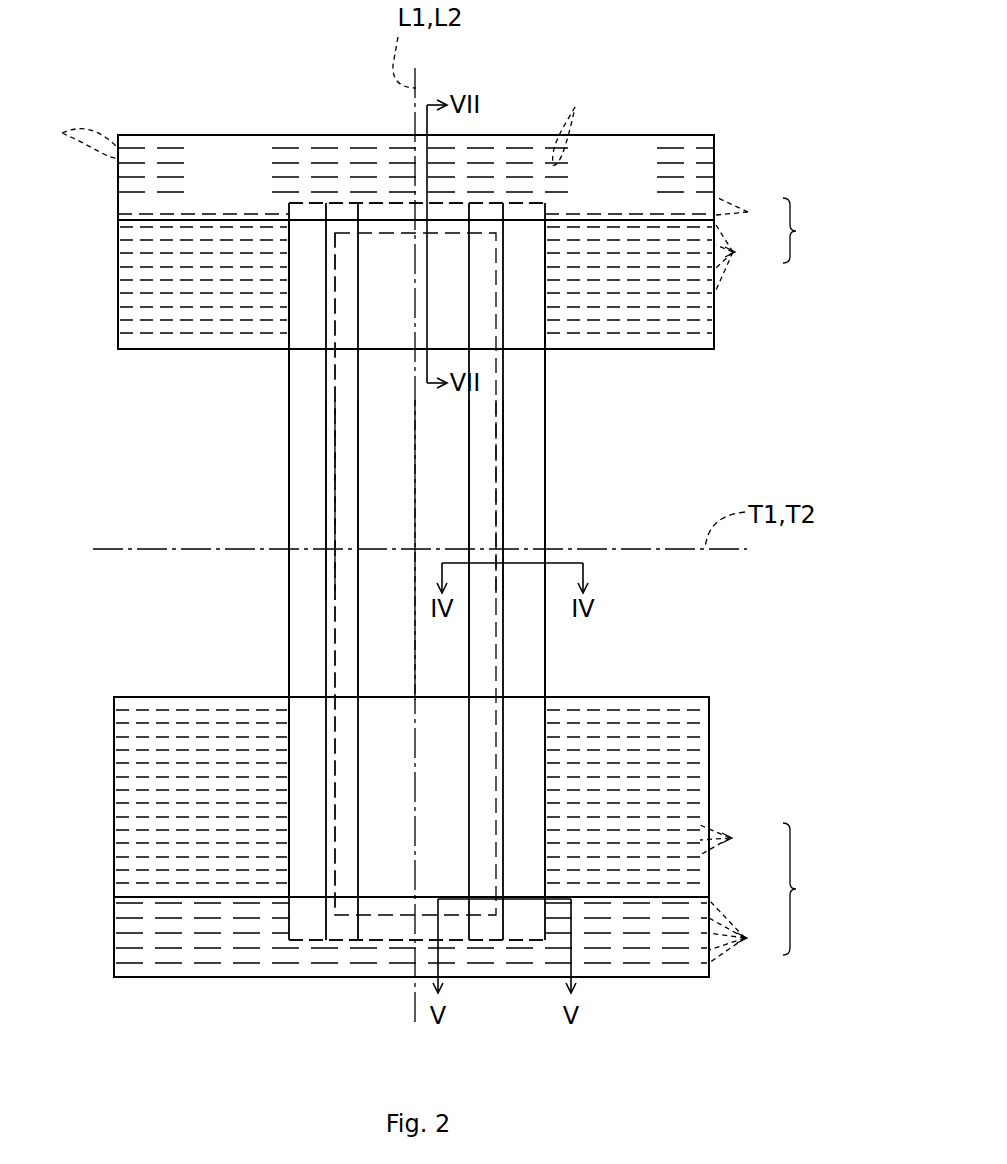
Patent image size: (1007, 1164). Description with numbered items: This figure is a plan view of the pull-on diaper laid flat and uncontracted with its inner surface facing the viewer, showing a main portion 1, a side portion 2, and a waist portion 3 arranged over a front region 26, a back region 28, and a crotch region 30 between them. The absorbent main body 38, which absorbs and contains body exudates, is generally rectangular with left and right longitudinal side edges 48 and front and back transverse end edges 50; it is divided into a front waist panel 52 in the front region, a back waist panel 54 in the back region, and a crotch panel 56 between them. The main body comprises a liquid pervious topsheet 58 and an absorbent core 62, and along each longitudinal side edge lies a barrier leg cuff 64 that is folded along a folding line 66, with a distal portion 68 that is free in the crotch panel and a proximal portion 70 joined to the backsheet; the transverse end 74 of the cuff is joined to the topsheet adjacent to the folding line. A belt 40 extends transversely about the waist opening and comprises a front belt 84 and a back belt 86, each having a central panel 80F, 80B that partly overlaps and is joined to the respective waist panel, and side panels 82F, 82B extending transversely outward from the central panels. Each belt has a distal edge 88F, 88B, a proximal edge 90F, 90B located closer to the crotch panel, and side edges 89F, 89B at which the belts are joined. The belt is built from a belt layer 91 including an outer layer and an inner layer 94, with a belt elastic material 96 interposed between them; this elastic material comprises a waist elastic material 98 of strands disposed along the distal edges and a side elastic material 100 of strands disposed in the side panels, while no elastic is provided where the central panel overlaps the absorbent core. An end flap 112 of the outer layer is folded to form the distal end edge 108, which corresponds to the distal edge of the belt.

The main portion 1 is at (549, 645).
The side portion 2 is at (115, 322).
The waist portion 3 is at (703, 130).
The front region 26 is at (96, 238).
The back region 28 is at (82, 893).
The crotch region 30 is at (115, 510).
The absorbent main body 38 is at (550, 437).
The belt 40 is at (749, 167).
The longitudinal side edge 48 is at (287, 455).
The transverse end edge 50 is at (383, 202).
The front waist panel 52 is at (283, 328).
The back waist panel 54 is at (282, 717).
The crotch panel 56 is at (283, 630).
The liquid pervious topsheet 58 is at (447, 542).
The absorbent core 62 is at (332, 487).
The barrier leg cuff 64 is at (345, 507).
The folding line 66 is at (358, 590).
The distal portion 68 is at (326, 518).
The proximal portion 70 is at (317, 578).
The transverse end 74 is at (343, 200).
The front central panel 80F is at (472, 148).
The back central panel 80B is at (395, 961).
The front side panels 82F is at (140, 330).
The back side panels 82B is at (150, 712).
The front belt 84 is at (673, 135).
The back belt 86 is at (178, 978).
The front distal edge 88F is at (605, 137).
The back distal edge 88B is at (222, 978).
The front side edges 89F is at (117, 198).
The back side edges 89B is at (114, 758).
The front proximal edge 90F is at (187, 350).
The back proximal edge 90B is at (187, 697).
The belt layer 91 is at (145, 130).
The inner layer 94 is at (117, 283).
The belt elastic material 96 is at (803, 576).
The waist elastic material 98 is at (403, 520).
The side elastic material 100 is at (738, 540).
The distal end edge 108 is at (253, 135).
The end flap 112 is at (208, 170).